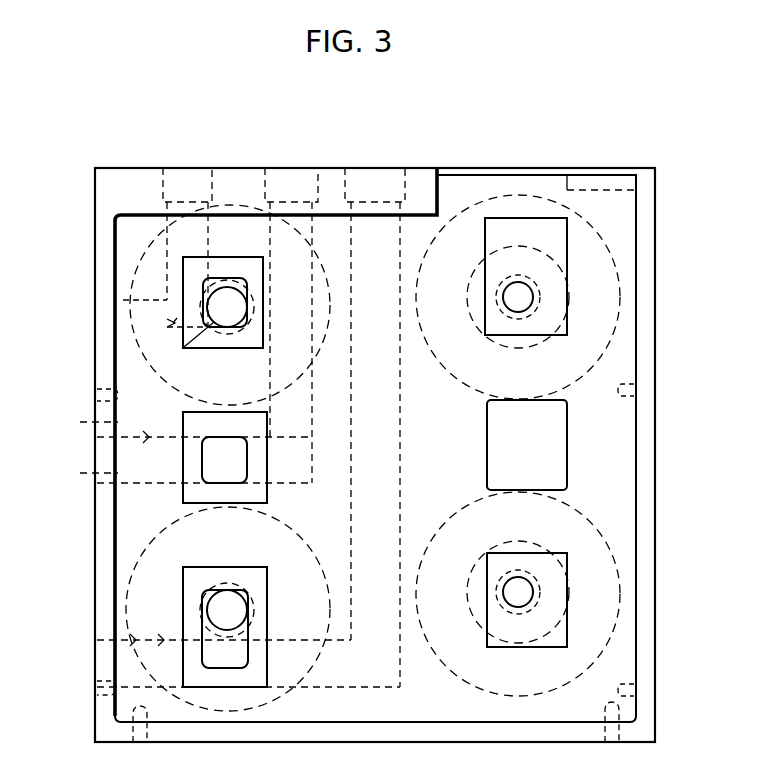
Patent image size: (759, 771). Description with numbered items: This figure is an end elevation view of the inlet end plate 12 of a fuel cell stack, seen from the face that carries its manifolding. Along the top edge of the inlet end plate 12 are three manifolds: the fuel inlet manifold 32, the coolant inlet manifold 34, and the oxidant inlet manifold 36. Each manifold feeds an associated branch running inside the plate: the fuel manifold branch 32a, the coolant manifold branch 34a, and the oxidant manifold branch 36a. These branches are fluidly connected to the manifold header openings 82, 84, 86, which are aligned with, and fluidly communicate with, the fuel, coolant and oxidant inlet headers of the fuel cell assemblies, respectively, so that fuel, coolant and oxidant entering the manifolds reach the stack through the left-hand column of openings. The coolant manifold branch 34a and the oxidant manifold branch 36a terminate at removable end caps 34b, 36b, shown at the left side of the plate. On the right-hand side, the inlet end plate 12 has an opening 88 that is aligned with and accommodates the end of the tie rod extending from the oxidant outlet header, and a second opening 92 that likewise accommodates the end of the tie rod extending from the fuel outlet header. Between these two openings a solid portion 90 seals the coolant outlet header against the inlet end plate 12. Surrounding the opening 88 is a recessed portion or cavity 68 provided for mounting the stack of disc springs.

The inlet end plate 12 is at (616, 473).
The fuel inlet manifold 32 is at (175, 190).
The manifold branch 32a is at (113, 298).
The coolant inlet manifold 34 is at (280, 188).
The coolant manifold branch 34a is at (84, 423).
The removable end cap 34b is at (90, 475).
The oxidant inlet manifold 36 is at (403, 185).
The oxidant manifold branch 36a is at (160, 640).
The removable end cap 36b is at (93, 690).
The recessed portion or cavity 68 is at (545, 195).
The manifold header opening 82 is at (215, 285).
The manifold header opening 84 is at (203, 470).
The manifold header opening 86 is at (212, 657).
The opening 88 is at (525, 297).
The solid portion 90 is at (553, 422).
The opening 92 is at (520, 590).